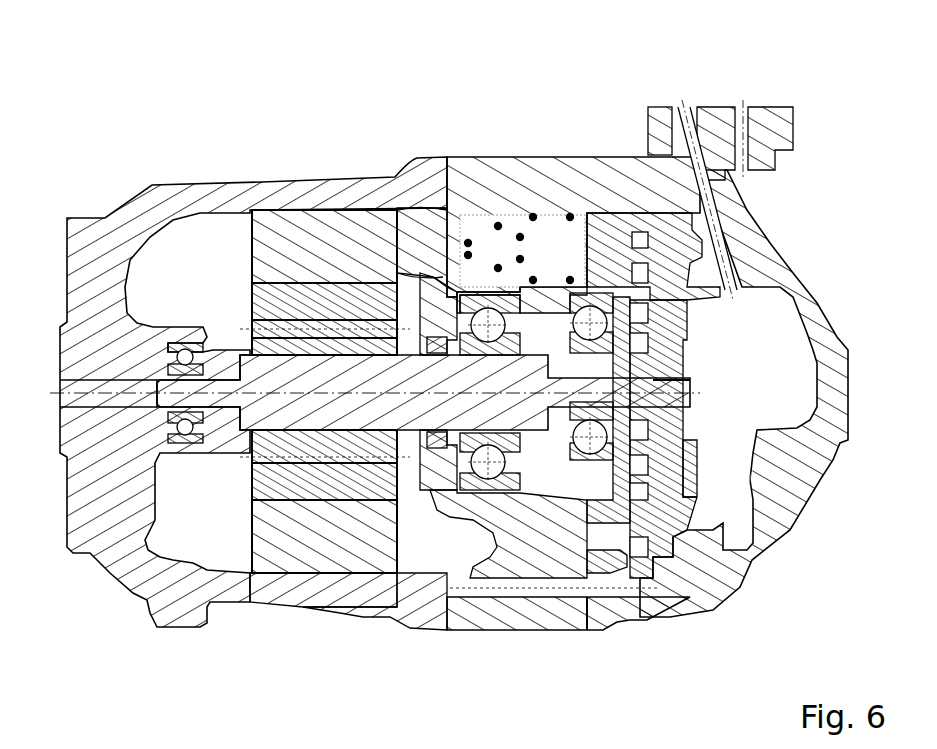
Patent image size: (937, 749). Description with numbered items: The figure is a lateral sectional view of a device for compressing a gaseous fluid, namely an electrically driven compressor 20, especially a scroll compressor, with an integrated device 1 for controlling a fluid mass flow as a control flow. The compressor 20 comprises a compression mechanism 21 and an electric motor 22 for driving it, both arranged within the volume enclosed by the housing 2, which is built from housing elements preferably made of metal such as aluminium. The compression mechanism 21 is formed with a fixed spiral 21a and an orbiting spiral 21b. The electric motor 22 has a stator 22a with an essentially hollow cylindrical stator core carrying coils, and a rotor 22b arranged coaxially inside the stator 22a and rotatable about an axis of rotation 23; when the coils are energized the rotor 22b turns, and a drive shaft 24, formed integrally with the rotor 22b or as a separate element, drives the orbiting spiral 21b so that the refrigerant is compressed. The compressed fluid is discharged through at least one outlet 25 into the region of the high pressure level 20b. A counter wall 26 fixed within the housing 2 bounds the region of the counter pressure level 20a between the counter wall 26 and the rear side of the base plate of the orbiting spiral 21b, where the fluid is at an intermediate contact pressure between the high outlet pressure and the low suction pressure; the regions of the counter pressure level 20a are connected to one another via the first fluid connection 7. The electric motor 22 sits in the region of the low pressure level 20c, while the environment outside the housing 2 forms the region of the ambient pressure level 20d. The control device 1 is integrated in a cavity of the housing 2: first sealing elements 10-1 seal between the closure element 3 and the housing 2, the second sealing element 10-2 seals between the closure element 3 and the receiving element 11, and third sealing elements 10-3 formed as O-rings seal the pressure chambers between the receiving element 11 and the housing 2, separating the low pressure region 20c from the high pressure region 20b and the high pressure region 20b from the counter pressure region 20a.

The device for controlling a fluid mass flow 1 is at (603, 240).
The housing 2 is at (463, 608).
The closure element 3 is at (420, 275).
The first fluid connection 7 is at (428, 293).
The first sealing elements 10-1 is at (468, 243).
The second sealing element 10-2 is at (520, 237).
The third sealing elements 10-3 is at (533, 217).
The receiving element 11 is at (603, 172).
The compressor 20 is at (832, 102).
The region of the counter pressure level 20a is at (548, 327).
The region of the high pressure level 20b is at (730, 418).
The region of the low pressure level 20c is at (420, 228).
The region of the ambient pressure level 20d is at (468, 138).
The compression mechanism 21 is at (690, 590).
The fixed spiral 21a is at (668, 510).
The orbiting spiral 21b is at (618, 503).
The electric motor 22 is at (362, 586).
The stator 22a is at (332, 518).
The rotor 22b is at (302, 484).
The axis of rotation 23 is at (95, 388).
The drive shaft 24 is at (245, 418).
The outlet 25 is at (690, 380).
The counter wall 26 is at (535, 548).